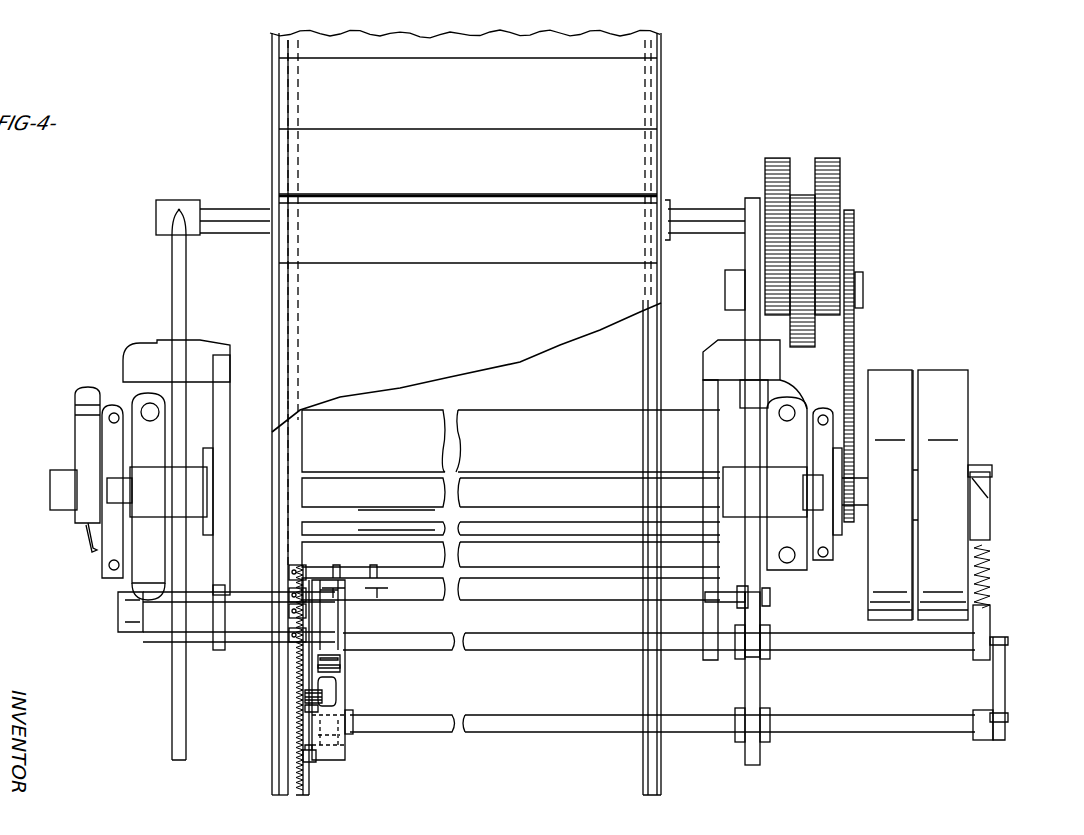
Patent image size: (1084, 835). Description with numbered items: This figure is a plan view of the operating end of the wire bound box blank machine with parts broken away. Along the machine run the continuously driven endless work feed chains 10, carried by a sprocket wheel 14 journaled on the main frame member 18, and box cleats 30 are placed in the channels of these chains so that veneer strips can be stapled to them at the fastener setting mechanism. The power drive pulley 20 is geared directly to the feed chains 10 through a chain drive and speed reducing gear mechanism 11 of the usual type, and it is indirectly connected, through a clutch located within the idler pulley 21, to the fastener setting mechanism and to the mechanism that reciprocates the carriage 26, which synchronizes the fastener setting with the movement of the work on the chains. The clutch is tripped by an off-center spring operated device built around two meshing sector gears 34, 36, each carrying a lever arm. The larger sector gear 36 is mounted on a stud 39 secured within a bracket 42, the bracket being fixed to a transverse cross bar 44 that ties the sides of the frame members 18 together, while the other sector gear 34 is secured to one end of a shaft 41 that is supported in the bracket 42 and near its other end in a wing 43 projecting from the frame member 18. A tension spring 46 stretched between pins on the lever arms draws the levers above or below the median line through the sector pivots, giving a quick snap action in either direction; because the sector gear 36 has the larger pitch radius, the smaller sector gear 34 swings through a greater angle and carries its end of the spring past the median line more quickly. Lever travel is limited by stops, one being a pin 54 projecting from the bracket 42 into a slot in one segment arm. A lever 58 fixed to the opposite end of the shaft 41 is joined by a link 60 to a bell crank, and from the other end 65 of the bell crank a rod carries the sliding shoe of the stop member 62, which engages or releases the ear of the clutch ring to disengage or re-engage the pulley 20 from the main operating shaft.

The endless work feed chains 10 is at (272, 786).
The chain drive and speed reducing gear mechanism 11 is at (864, 199).
The sprocket wheel 14 is at (668, 205).
The frame member 18 is at (180, 204).
The power drive pulley 20 is at (900, 371).
The idler pulley 21 is at (955, 370).
The carriage 26 is at (245, 392).
The box cleats 30 is at (656, 353).
The sector gear 34 is at (305, 706).
The sector gear 36 is at (305, 690).
The stud 39 is at (340, 668).
The shaft 41 is at (458, 735).
The bracket 42 is at (348, 690).
The wing 43 is at (762, 755).
The transverse cross bar 44 is at (448, 595).
The tension spring 46 is at (296, 652).
The pin 54 is at (312, 758).
The lever 58 is at (985, 742).
The link 60 is at (1000, 688).
The stop member 62 is at (1003, 524).
The end of bell crank 65 is at (990, 616).